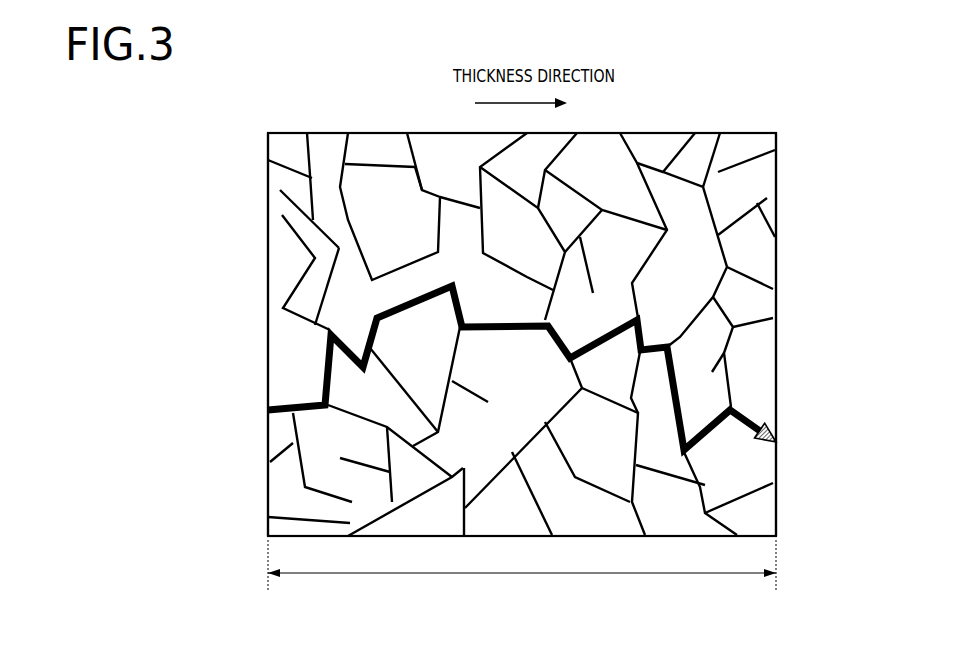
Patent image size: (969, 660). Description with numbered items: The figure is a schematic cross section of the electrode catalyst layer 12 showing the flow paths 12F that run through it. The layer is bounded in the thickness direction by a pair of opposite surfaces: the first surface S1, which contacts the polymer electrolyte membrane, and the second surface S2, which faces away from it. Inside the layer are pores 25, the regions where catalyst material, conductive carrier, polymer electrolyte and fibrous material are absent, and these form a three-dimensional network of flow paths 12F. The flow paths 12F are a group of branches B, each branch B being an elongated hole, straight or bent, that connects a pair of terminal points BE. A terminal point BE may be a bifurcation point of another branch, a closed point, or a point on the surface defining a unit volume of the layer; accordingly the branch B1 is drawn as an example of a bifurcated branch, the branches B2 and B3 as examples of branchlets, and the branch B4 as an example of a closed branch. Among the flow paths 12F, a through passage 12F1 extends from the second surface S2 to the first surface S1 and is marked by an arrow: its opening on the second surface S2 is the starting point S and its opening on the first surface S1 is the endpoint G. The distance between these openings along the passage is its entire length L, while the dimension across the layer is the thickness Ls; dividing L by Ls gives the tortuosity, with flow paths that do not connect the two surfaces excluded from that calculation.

The electrode catalyst layer 12 is at (784, 116).
The flow paths 12F is at (298, 410).
The through passage 12F1 is at (217, 384).
The first surface S1 is at (776, 187).
The second surface S2 is at (268, 187).
The branch B is at (375, 162).
The terminal point BE is at (340, 163).
The bifurcated branch B1 is at (655, 170).
The branchlet B2 is at (688, 153).
The branchlet B3 is at (764, 156).
The closed branch B4 is at (758, 205).
The pores 25 is at (302, 322).
The starting point S is at (249, 415).
The entire length L is at (680, 397).
The endpoint G is at (777, 441).
The thickness Ls is at (522, 571).